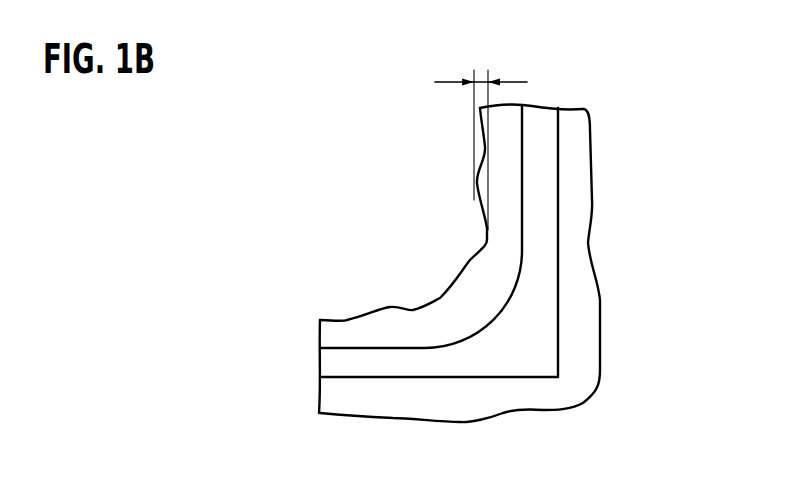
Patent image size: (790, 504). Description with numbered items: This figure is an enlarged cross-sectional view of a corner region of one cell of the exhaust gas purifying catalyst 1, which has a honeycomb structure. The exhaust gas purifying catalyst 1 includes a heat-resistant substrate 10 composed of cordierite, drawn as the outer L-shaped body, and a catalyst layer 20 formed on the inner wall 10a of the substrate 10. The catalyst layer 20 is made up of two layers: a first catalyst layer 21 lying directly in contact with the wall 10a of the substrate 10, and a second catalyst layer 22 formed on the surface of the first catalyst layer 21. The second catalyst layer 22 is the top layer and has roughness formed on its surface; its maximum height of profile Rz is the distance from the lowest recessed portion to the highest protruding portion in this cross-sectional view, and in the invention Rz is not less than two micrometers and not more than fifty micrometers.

The exhaust gas purifying catalyst 1 is at (609, 126).
The substrate 10 is at (332, 394).
The inner wall 10a is at (497, 377).
The catalyst layer 20 is at (238, 320).
The first catalyst layer 21 is at (330, 360).
The second catalyst layer 22 is at (328, 328).
The maximum height of profile Rz is at (481, 135).